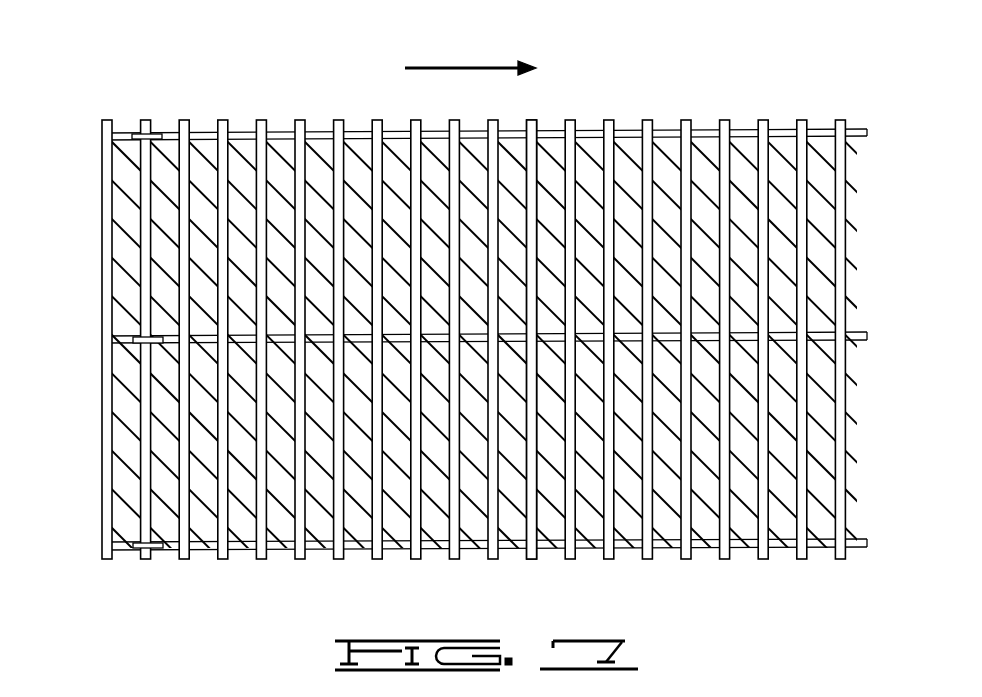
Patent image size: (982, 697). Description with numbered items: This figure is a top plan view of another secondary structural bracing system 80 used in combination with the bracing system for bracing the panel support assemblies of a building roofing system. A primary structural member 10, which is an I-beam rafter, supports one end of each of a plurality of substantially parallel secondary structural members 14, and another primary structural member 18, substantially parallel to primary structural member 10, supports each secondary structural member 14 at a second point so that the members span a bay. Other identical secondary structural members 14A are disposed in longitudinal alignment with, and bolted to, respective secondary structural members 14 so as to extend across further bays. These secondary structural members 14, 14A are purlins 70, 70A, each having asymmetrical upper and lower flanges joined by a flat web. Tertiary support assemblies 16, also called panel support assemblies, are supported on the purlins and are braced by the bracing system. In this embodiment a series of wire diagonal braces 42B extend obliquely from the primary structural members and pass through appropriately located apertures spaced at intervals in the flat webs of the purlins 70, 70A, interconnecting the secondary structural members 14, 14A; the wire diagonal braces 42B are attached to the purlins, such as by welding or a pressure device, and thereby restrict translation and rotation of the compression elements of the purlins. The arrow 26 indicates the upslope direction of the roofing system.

The primary structural member 10 is at (162, 557).
The secondary structural member 14 is at (197, 565).
The secondary structural member 14A is at (610, 120).
The tertiary support assembly 16 is at (128, 342).
The primary structural member 18 is at (105, 121).
The arrow 26 is at (468, 72).
The wire diagonal brace 42B is at (157, 187).
The purlin 70 is at (307, 559).
The purlin 70A is at (340, 121).
The secondary structural bracing system 80 is at (320, 148).